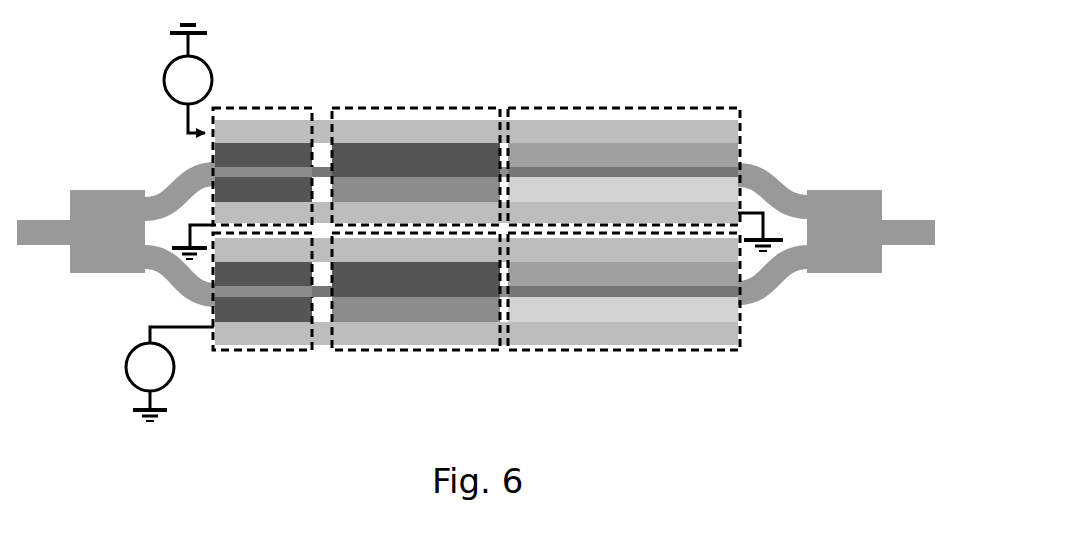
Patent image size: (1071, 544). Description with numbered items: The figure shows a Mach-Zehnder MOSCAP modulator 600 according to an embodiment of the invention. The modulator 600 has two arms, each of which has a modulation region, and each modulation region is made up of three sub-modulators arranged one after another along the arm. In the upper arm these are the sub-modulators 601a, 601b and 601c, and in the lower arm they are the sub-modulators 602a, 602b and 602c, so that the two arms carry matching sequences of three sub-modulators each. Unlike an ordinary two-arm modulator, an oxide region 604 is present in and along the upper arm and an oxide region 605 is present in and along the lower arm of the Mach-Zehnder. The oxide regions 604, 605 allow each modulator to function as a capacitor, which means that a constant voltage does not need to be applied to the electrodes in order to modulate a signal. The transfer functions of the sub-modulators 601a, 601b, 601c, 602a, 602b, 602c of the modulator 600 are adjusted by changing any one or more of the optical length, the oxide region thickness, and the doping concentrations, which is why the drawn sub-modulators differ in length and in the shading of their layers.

The Mach-Zehnder MOSCAP modulator 600 is at (105, 81).
The sub-modulator 601a is at (287, 108).
The sub-modulator 601b is at (462, 108).
The sub-modulator 601c is at (658, 108).
The sub-modulator 602a is at (236, 352).
The sub-modulator 602b is at (425, 352).
The sub-modulator 602c is at (625, 352).
The oxide region 604 is at (320, 173).
The oxide region 605 is at (323, 292).